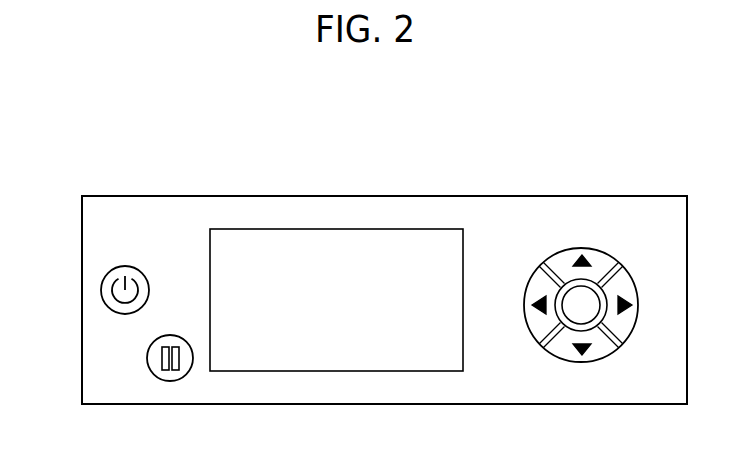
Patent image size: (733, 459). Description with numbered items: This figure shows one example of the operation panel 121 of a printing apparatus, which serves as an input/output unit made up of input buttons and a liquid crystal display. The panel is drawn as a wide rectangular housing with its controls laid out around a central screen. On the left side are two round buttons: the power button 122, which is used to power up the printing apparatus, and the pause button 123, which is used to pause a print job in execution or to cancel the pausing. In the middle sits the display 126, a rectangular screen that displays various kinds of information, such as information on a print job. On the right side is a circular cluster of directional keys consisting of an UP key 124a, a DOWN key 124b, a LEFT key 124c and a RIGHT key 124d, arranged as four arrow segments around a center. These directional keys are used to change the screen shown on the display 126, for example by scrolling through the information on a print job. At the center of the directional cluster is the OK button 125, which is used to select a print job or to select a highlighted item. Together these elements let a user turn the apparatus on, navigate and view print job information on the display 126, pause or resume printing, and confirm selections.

The operation panel 121 is at (153, 195).
The power button 122 is at (101, 290).
The pause button 123 is at (147, 358).
The UP key 124a is at (617, 238).
The DOWN key 124b is at (561, 358).
The LEFT key 124c is at (525, 297).
The RIGHT key 124d is at (657, 285).
The OK button 125 is at (593, 316).
The display 126 is at (403, 229).